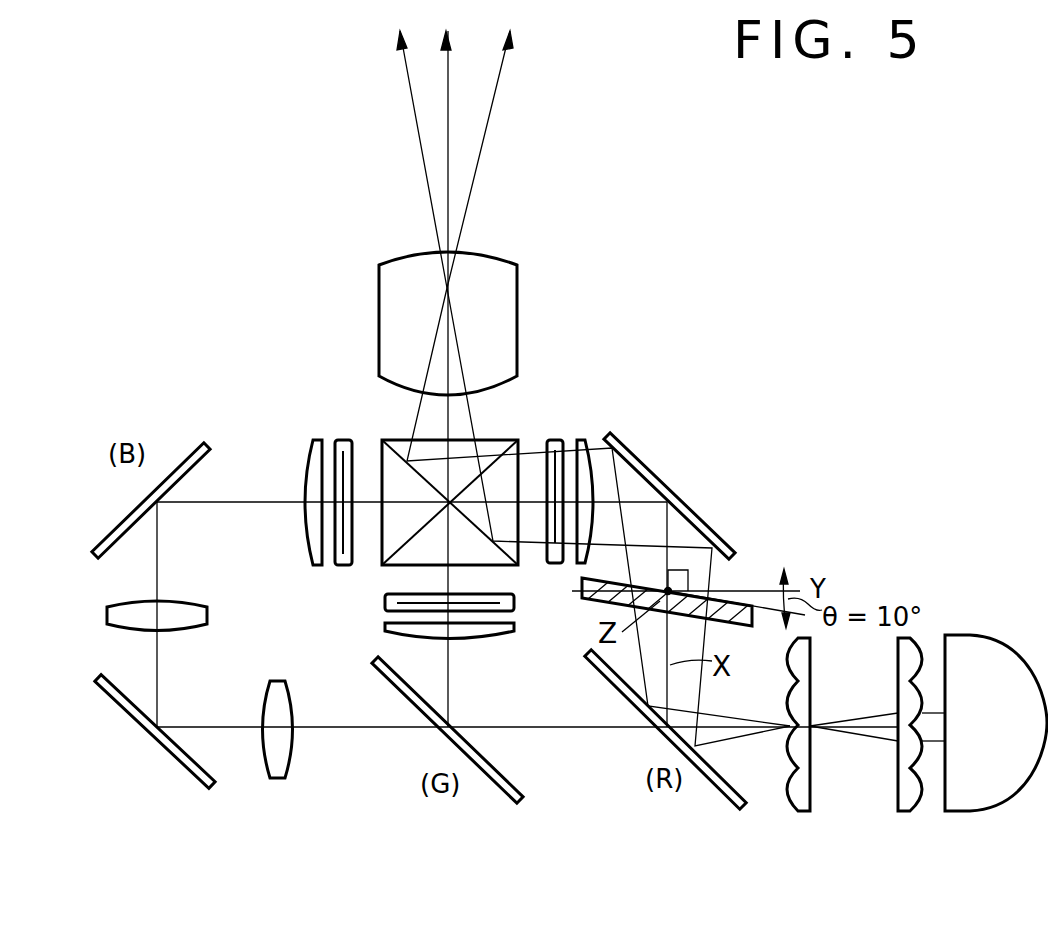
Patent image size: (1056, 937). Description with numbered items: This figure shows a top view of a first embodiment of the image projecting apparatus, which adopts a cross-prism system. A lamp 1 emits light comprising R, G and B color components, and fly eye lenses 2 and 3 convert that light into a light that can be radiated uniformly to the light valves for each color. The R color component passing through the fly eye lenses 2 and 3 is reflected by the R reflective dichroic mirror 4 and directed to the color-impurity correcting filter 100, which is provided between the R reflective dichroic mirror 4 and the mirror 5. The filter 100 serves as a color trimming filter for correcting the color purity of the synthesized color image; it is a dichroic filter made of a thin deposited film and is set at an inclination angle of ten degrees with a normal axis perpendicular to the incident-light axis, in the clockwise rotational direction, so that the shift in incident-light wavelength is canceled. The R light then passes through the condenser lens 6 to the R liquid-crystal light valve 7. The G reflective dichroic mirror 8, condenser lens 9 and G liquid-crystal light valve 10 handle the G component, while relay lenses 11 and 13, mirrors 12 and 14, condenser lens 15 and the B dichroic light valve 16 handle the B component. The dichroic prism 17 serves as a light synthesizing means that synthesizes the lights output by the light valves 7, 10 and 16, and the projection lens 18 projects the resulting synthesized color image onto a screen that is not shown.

The lamp 1 is at (1015, 800).
The fly eye lens 2 is at (802, 815).
The fly eye lens 3 is at (905, 815).
The R reflective dichroic mirror 4 is at (710, 790).
The mirror 5 is at (640, 462).
The condenser lens 6 is at (580, 442).
The R liquid-crystal light valve 7 is at (555, 442).
The G reflective dichroic mirror 8 is at (488, 780).
The condenser lens 9 is at (503, 637).
The G liquid-crystal light valve 10 is at (385, 605).
The relay lens 11 is at (276, 782).
The mirror 12 is at (178, 765).
The relay lens 13 is at (107, 617).
The mirror 14 is at (118, 528).
The condenser lens 15 is at (308, 448).
The B dichroic light valve 16 is at (348, 444).
The dichroic prism 17 is at (482, 440).
The projection lens 18 is at (495, 270).
The color-impurity correcting filter 100 is at (722, 603).